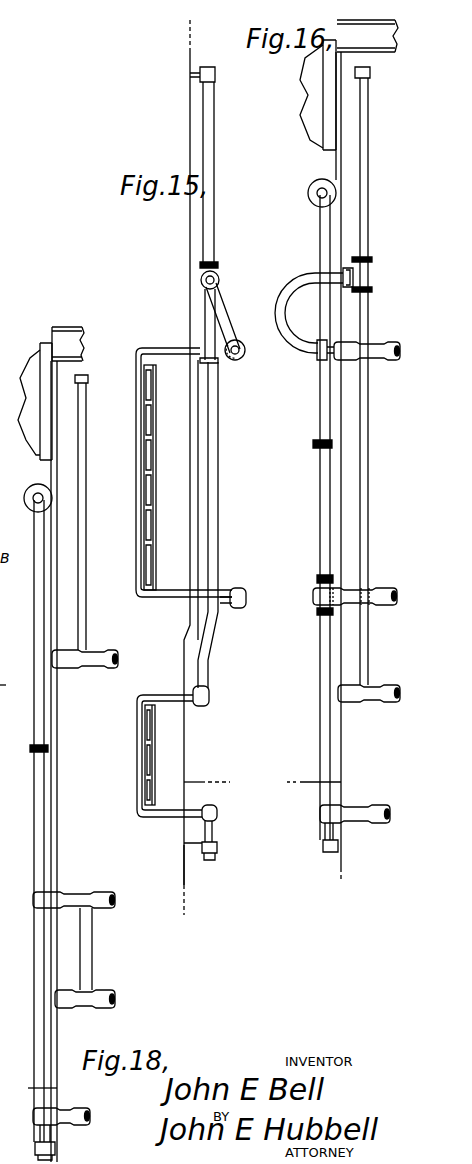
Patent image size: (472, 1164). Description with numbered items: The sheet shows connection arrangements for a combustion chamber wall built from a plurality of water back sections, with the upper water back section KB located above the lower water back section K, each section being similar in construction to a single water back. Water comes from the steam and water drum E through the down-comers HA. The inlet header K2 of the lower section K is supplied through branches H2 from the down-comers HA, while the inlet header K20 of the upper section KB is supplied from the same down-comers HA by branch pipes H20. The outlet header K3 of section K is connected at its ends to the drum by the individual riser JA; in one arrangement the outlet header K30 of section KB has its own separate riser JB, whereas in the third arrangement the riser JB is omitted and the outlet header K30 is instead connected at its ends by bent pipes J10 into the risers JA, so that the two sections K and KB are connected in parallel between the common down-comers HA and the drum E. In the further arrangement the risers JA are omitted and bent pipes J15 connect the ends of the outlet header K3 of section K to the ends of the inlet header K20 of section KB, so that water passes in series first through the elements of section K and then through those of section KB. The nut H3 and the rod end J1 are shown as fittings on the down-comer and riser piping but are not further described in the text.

In FIG. 18, the steam and water drum E is at (30, 350).
In FIG. 16, the steam and water drum E is at (313, 91).
In FIG. 18, the riser JB is at (78, 542).
In FIG. 18, the down-comer HA is at (42, 801).
In FIG. 16, the down-comer HA is at (319, 417).
In FIG. 18, the outlet header K30 is at (66, 668).
In FIG. 15, the outlet header K30 is at (240, 361).
In FIG. 16, the outlet header K30 is at (382, 362).
In FIG. 18, the inlet header K20 is at (67, 893).
In FIG. 15, the inlet header K20 is at (244, 588).
In FIG. 16, the inlet header K20 is at (383, 588).
In FIG. 18, the bent pipe J15 is at (93, 940).
In FIG. 18, the outlet header K3 is at (100, 992).
In FIG. 15, the outlet header K3 is at (210, 696).
In FIG. 16, the outlet header K3 is at (388, 703).
In FIG. 18, the inlet header K2 is at (80, 1101).
In FIG. 15, the inlet header K2 is at (218, 813).
In FIG. 16, the inlet header K2 is at (387, 800).
In FIG. 18, the nut H3 is at (52, 1145).
In FIG. 15, the nut H3 is at (214, 836).
In FIG. 16, the nut H3 is at (327, 835).
In FIG. 15, the branch H2 is at (193, 856).
In FIG. 15, the branch pipe H20 is at (225, 608).
In FIG. 16, the branch pipe H20 is at (315, 608).
In FIG. 15, the rod end J1 is at (197, 64).
In FIG. 15, the bent pipe J10 is at (224, 306).
In FIG. 16, the bent pipe J10 is at (305, 270).
In FIG. 15, the water back section KB is at (143, 503).
In FIG. 15, the riser JA is at (216, 508).
In FIG. 16, the riser JA is at (371, 483).
In FIG. 15, the water back section K is at (143, 742).